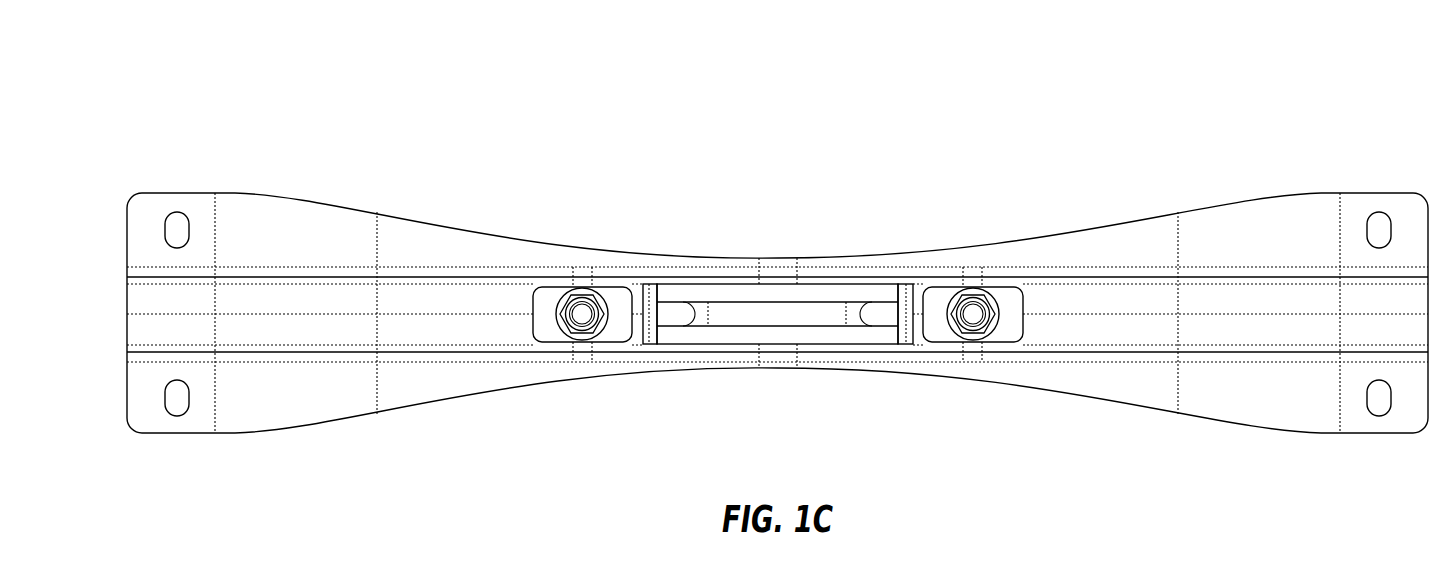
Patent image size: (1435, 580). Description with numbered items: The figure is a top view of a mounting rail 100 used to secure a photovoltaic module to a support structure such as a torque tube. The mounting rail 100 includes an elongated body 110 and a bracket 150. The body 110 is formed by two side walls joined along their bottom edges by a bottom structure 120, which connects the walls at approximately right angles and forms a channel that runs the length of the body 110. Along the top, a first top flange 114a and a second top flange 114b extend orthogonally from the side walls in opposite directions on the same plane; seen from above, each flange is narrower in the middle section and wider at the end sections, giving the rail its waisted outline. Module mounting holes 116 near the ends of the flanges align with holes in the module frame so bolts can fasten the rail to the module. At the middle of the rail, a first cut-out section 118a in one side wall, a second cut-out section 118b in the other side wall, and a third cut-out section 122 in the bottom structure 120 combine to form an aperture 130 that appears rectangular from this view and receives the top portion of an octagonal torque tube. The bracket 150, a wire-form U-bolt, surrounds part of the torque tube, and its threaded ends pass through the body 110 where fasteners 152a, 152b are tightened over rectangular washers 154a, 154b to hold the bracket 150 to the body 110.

The mounting rail 100 is at (1349, 74).
The body 110 is at (128, 390).
The first top flange 114a is at (262, 215).
The second top flange 114b is at (262, 412).
The module mounting holes 116 is at (177, 212).
The first cut-out section 118a is at (772, 284).
The second cut-out section 118b is at (771, 344).
The bottom structure 120 is at (1088, 332).
The third cut-out section 122 is at (666, 333).
The aperture 130 is at (829, 279).
The bracket 150 is at (823, 316).
The fastener 152a is at (580, 308).
The fastener 152b is at (976, 308).
The washer 154a is at (618, 302).
The washer 154b is at (937, 300).